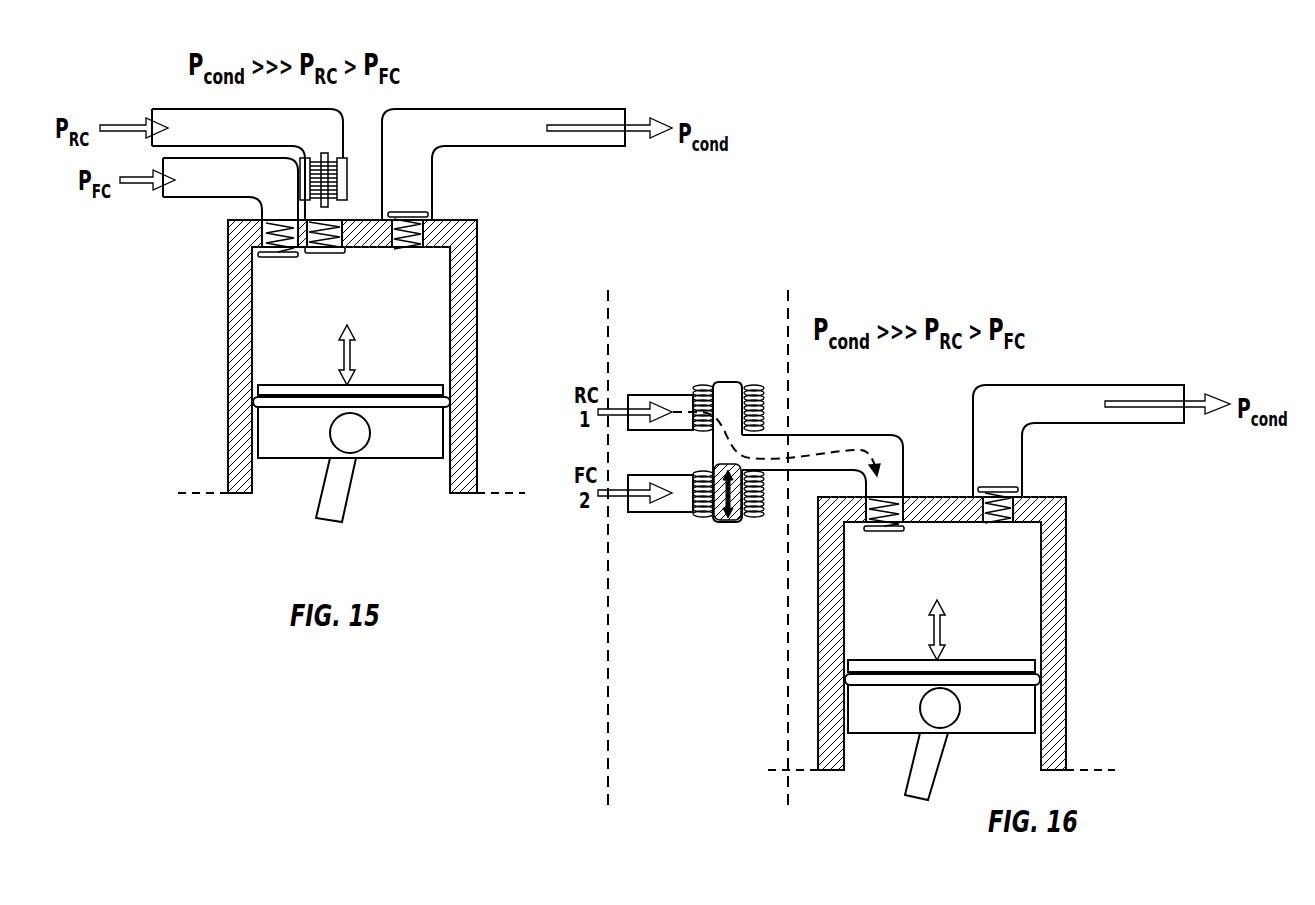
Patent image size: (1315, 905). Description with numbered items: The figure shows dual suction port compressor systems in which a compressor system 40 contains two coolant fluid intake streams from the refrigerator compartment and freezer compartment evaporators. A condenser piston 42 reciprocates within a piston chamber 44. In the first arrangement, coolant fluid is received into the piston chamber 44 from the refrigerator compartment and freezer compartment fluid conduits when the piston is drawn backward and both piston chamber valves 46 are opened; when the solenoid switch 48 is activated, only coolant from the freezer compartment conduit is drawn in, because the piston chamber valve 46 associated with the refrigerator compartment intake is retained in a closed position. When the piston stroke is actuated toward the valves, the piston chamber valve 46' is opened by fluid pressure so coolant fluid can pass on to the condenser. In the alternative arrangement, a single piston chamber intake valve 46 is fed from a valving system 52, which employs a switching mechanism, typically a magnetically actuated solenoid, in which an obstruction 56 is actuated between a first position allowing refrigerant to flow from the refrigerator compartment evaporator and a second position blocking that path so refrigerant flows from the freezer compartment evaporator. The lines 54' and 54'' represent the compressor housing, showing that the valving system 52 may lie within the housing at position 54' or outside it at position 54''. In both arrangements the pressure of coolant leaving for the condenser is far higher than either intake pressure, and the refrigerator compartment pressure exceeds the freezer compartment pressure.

In FIG. 15, the compressor system 40 is at (556, 80).
In FIG. 16, the compressor system 40 is at (1035, 238).
In FIG. 15, the condenser piston 42 is at (400, 447).
In FIG. 16, the condenser piston 42 is at (888, 720).
In FIG. 15, the piston chamber 44 is at (272, 353).
In FIG. 16, the piston chamber 44 is at (1025, 610).
In FIG. 15, the piston chamber valve 46 is at (235, 277).
In FIG. 16, the piston chamber valve 46 is at (903, 479).
In FIG. 15, the piston chamber valve 46' is at (434, 209).
In FIG. 16, the piston chamber valve 46' is at (1022, 483).
In FIG. 15, the solenoid switch 48 is at (348, 173).
In FIG. 16, the valving system 52 is at (683, 359).
In FIG. 16, the housing position line 54' is at (637, 525).
In FIG. 16, the housing position line 54'' is at (824, 519).
In FIG. 16, the obstruction 56 is at (740, 521).